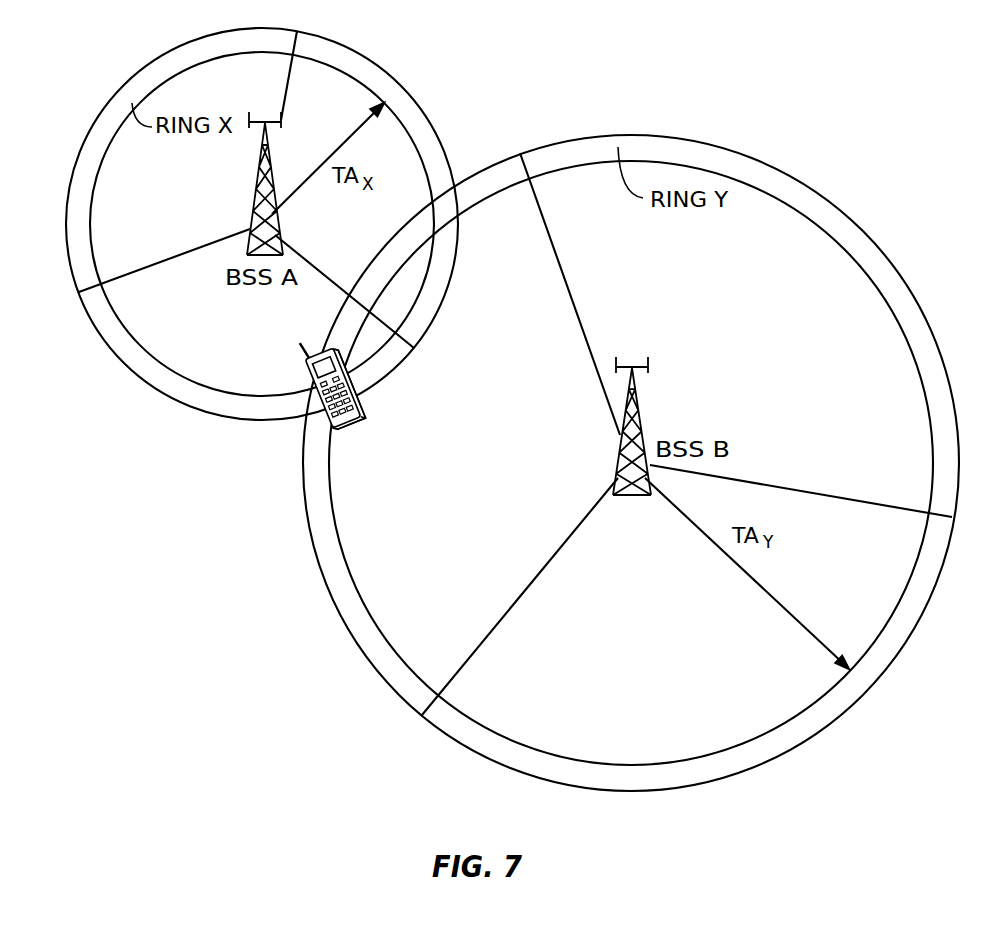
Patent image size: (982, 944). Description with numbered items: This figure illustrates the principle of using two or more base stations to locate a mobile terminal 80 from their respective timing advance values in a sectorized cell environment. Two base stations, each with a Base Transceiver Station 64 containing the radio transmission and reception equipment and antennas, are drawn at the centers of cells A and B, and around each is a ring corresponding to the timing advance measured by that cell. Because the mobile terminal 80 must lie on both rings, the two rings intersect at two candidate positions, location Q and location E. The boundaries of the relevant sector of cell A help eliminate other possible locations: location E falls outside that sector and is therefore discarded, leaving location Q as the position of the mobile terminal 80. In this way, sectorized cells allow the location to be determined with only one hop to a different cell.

The Base Transceiver Station (BTS) 64 is at (257, 198).
The mobile terminal 80 is at (352, 412).
The location E is at (447, 207).
The location Q is at (312, 415).